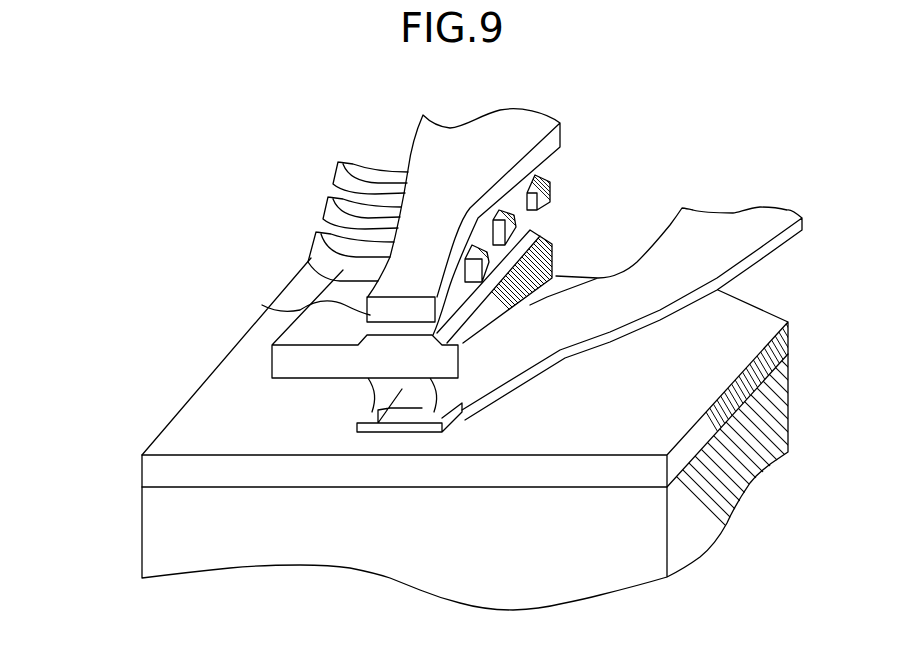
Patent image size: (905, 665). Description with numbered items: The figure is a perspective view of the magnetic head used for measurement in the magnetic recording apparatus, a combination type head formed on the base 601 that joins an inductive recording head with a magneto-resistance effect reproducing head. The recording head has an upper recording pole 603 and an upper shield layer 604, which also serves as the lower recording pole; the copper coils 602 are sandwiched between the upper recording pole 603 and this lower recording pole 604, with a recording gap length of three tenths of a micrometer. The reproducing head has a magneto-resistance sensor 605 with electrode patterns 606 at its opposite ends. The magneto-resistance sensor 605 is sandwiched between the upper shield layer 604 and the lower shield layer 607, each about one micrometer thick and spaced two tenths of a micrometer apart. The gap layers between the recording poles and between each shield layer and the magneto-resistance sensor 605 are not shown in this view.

The base 601 is at (142, 537).
The coils 602 is at (327, 218).
The upper recording pole 603 is at (277, 308).
The upper shield layer 604 is at (272, 360).
The magneto-resistance sensor 605 is at (400, 430).
The electrode patterns 606 is at (372, 407).
The lower shield layer 607 is at (142, 473).